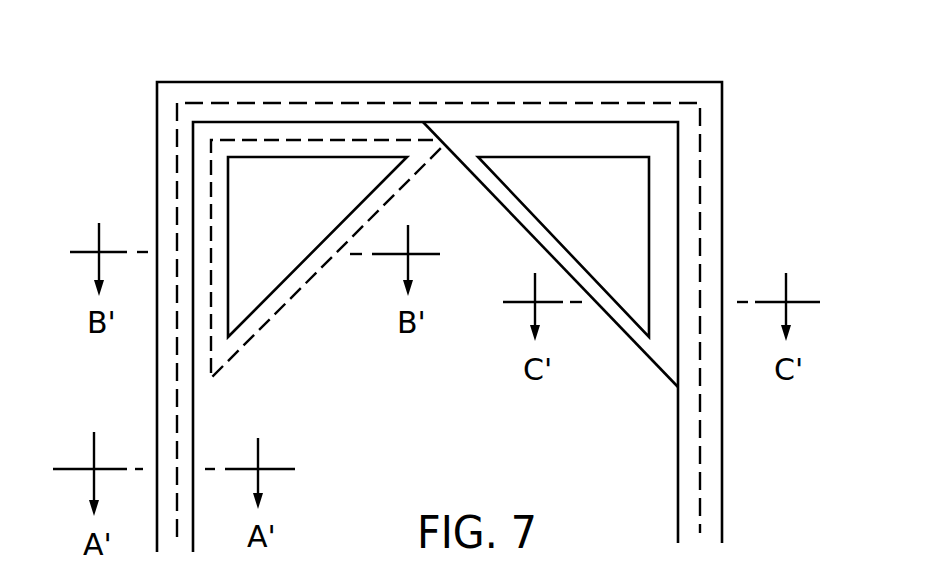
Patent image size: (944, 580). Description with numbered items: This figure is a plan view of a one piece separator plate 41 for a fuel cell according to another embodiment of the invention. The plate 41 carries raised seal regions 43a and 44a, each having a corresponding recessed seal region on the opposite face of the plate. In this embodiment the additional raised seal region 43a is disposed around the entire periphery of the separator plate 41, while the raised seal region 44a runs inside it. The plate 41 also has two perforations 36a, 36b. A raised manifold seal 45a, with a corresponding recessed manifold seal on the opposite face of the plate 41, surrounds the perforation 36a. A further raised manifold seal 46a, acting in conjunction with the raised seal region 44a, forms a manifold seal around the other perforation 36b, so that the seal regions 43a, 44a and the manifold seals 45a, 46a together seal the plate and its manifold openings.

The one piece separator plate 41 is at (548, 60).
The raised seal region 43a is at (177, 172).
The raised seal region 44a is at (362, 122).
The raised manifold seal 45a is at (262, 138).
The raised manifold seal 46a is at (518, 223).
The perforation 36a is at (314, 207).
The perforation 36b is at (601, 208).